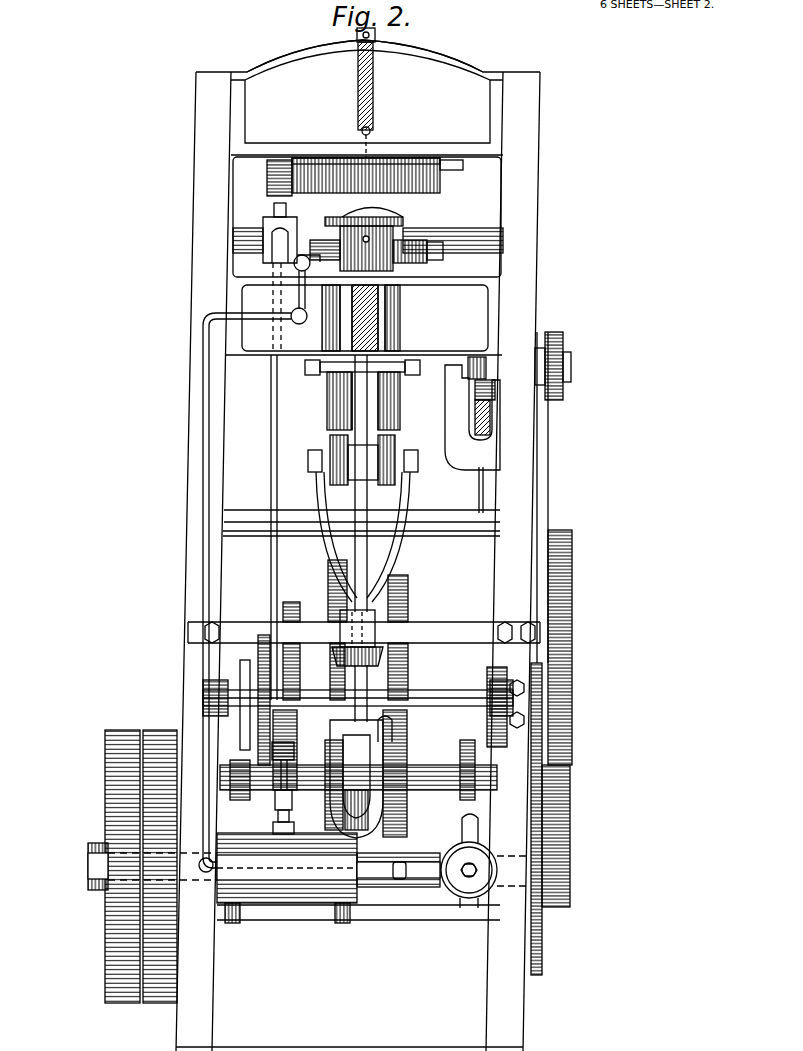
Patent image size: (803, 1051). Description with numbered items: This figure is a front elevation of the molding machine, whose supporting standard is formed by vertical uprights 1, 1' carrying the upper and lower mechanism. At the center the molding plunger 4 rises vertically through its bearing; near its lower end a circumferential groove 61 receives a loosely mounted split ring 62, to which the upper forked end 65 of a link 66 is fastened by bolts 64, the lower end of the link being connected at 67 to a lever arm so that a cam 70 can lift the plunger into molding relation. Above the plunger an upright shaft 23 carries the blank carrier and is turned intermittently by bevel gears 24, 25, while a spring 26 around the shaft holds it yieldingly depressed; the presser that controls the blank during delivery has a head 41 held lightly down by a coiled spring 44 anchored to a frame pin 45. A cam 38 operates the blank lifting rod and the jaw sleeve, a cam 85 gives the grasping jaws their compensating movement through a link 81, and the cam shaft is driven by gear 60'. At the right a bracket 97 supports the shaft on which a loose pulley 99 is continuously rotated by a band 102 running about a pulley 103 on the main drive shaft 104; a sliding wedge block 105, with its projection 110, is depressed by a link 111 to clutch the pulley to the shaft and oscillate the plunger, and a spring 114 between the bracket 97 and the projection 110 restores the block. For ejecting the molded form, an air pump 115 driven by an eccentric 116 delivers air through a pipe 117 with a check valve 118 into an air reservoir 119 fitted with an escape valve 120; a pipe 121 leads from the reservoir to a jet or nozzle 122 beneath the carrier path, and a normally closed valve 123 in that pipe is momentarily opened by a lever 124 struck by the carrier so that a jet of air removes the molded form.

The vertical upright 1 is at (367, 545).
The arched top of frame 1' is at (380, 63).
The molding plunger 4 is at (326, 427).
The upright shaft 23 is at (372, 400).
The bevel gear 24 is at (385, 657).
The bevel gear 25 is at (336, 666).
The spring 26 is at (380, 308).
The cam 38 is at (330, 600).
The head 41 is at (403, 210).
The coiled spring 44 is at (375, 106).
The pin 45 is at (362, 128).
The gear 60' is at (583, 647).
The circumferential groove 61 is at (387, 450).
The split ring 62 is at (392, 475).
The bolt 64 is at (308, 462).
The forked end 65 is at (322, 497).
The link 66 is at (344, 580).
The connection 67 is at (334, 808).
The cam 70 is at (406, 578).
The link 81 is at (271, 408).
The cam 85 is at (284, 610).
The bracket 97 is at (472, 417).
The loose pulley 99 is at (556, 345).
The band 102 is at (549, 464).
The pulley 103 is at (543, 960).
The main drive shaft 104 is at (90, 866).
The sliding wedge block 105 is at (474, 365).
The projection 110 is at (492, 395).
The link 111 is at (485, 500).
The spring 114 is at (490, 425).
The air pump 115 is at (468, 884).
The eccentric 116 is at (478, 830).
The pipe 117 is at (376, 888).
The check valve 118 is at (399, 880).
The air reservoir 119 is at (268, 903).
The escape valve 120 is at (273, 813).
The pipe 121 is at (200, 553).
The jet or nozzle 122 is at (282, 221).
The valve 123 is at (298, 277).
The lever 124 is at (323, 274).